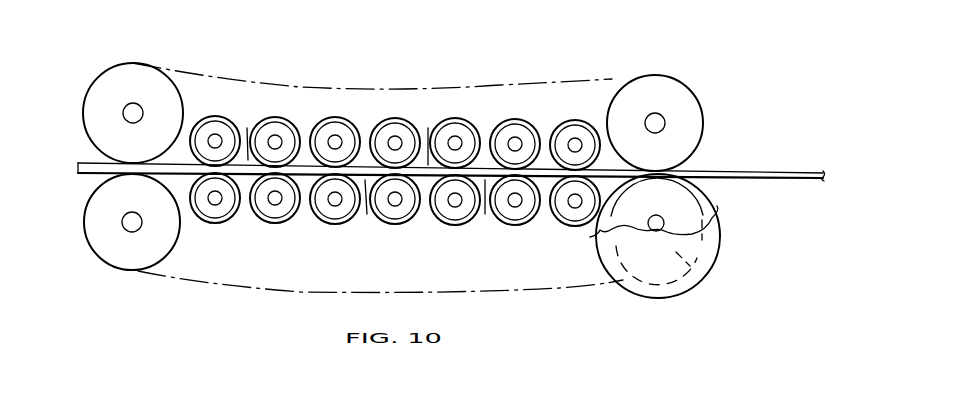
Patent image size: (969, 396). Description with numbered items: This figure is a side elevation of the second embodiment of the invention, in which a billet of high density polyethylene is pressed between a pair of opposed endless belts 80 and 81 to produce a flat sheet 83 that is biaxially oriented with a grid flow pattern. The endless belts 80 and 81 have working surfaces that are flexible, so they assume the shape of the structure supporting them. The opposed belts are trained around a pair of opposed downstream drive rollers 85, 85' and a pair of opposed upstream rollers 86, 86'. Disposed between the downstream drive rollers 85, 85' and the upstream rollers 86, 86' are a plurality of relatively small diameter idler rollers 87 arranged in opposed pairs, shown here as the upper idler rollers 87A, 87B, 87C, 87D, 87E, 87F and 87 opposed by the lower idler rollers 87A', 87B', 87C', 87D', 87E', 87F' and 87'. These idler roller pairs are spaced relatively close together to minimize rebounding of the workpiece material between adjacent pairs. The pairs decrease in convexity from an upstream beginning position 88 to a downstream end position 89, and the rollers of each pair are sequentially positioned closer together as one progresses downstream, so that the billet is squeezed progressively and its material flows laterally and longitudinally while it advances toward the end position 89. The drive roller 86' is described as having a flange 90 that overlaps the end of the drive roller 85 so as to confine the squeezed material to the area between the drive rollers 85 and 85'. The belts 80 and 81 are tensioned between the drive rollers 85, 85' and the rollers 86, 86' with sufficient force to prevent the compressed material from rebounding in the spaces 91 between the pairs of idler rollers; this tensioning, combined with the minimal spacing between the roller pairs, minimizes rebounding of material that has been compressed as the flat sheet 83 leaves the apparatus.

The endless belt 80 is at (250, 290).
The endless belt 81 is at (273, 81).
The flat sheet 83 is at (783, 173).
The downstream drive roller 85 is at (668, 110).
The downstream drive roller 85' is at (667, 236).
The upstream roller 86 is at (116, 113).
The upstream roller 86' is at (109, 222).
The idler roller 87 is at (575, 114).
The idler roller 87A is at (215, 110).
The idler roller 87B is at (288, 110).
The idler roller 87C is at (345, 112).
The idler roller 87D is at (403, 112).
The idler roller 87E is at (462, 112).
The idler roller 87F is at (520, 113).
The idler roller 87' is at (575, 224).
The idler roller 87A' is at (215, 221).
The idler roller 87B' is at (275, 221).
The idler roller 87C' is at (335, 229).
The idler roller 87D' is at (395, 220).
The idler roller 87E' is at (451, 230).
The idler roller 87F' is at (515, 224).
The upstream beginning position 88 is at (93, 180).
The downstream end position 89 is at (692, 163).
The flange 90 is at (717, 230).
The space 91 is at (247, 128).